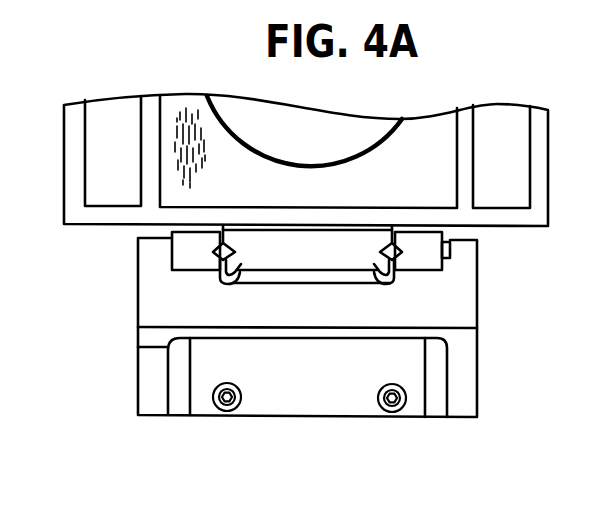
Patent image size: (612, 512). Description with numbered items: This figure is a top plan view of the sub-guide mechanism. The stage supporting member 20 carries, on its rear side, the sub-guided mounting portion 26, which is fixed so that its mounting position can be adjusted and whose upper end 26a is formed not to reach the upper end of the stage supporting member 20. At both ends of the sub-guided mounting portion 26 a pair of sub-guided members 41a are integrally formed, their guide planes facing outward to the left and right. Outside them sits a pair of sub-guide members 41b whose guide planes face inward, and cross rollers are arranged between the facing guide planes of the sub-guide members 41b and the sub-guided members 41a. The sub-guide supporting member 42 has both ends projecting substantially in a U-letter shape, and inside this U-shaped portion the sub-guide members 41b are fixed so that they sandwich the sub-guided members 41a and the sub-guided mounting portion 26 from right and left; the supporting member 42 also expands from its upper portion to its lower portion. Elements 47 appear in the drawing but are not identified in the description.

The stage supporting member 20 is at (517, 227).
The sub-guided mounting portion 26 is at (350, 279).
The upper end 26a is at (320, 257).
The sub-guided member 41a is at (220, 287).
The sub-guide member 41b is at (200, 257).
The sub-guide supporting member 42 is at (138, 340).
The screw 47 is at (223, 417).